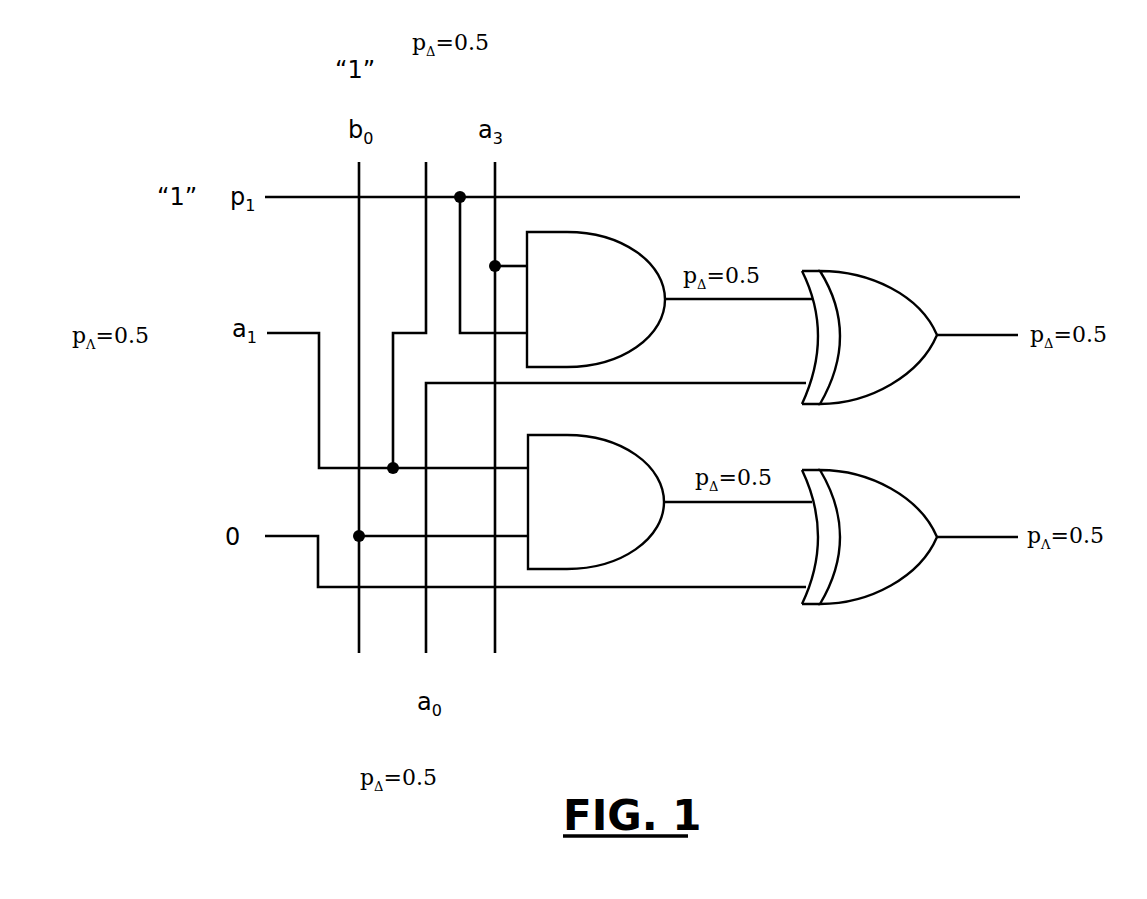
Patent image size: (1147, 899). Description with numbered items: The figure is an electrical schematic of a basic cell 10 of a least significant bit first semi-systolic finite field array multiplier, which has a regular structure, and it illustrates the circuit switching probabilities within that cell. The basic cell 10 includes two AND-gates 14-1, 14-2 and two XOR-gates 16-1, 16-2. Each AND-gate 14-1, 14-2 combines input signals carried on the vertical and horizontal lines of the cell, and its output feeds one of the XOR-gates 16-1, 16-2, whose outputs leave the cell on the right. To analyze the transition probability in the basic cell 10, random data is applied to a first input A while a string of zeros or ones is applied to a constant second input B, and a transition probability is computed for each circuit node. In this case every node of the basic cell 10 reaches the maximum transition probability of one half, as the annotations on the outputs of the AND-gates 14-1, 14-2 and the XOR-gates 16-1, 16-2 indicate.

The basic cell 10 is at (755, 50).
The AND-gate 14-1 is at (600, 240).
The AND-gate 14-2 is at (627, 455).
The XOR-gate 16-1 is at (925, 307).
The XOR-gate 16-2 is at (913, 497).